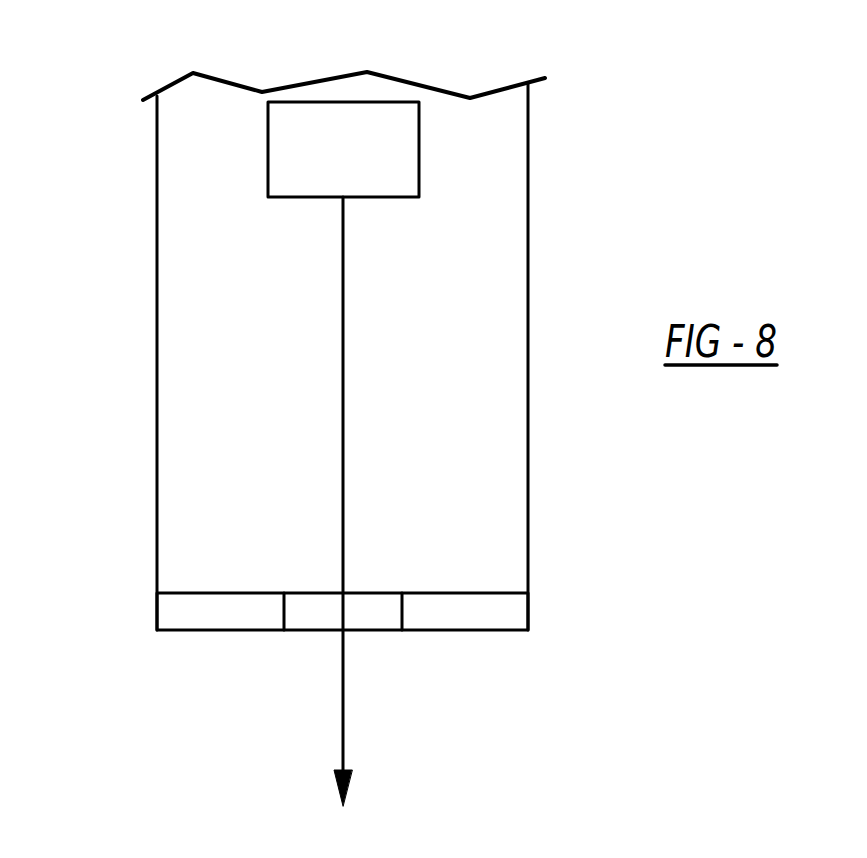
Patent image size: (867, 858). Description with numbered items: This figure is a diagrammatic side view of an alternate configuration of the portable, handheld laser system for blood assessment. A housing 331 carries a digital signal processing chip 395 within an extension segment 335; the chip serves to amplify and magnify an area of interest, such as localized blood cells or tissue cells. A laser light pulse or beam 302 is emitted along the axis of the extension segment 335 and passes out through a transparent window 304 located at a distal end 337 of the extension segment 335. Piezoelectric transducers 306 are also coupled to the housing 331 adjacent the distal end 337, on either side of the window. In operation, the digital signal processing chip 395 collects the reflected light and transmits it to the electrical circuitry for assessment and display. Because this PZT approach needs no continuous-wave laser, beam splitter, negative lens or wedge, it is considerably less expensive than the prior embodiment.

The laser light pulse or beam 302 is at (343, 488).
The transparent window 304 is at (375, 615).
The piezoelectric transducers 306 is at (183, 615).
The housing 331 is at (528, 197).
The extension segment 335 is at (158, 345).
The distal end 337 is at (308, 630).
The digital signal processing chip 395 is at (372, 178).